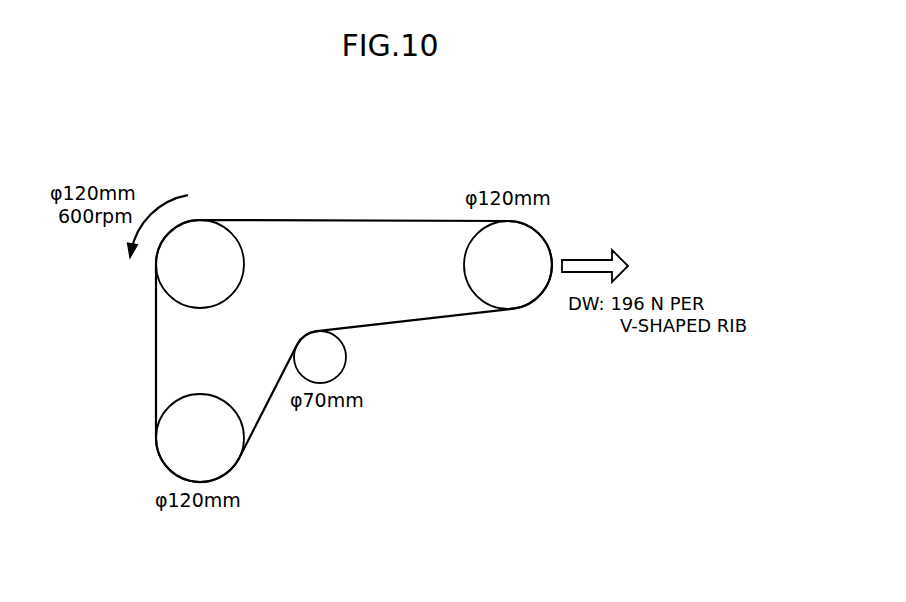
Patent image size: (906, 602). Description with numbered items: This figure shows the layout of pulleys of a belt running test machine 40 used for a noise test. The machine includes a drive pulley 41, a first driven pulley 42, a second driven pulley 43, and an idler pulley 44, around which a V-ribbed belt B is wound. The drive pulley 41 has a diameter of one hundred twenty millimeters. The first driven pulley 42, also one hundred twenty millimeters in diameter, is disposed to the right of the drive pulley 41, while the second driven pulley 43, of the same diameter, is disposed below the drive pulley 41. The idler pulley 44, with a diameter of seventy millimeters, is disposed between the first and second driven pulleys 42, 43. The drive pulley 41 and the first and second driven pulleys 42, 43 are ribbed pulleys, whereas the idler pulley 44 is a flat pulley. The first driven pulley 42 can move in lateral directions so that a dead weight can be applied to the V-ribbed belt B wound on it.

The belt running test machine 40 is at (452, 158).
The V-ribbed belt B is at (362, 221).
The drive pulley 41 is at (172, 270).
The first driven pulley 42 is at (533, 240).
The second driven pulley 43 is at (172, 442).
The idler pulley 44 is at (333, 358).